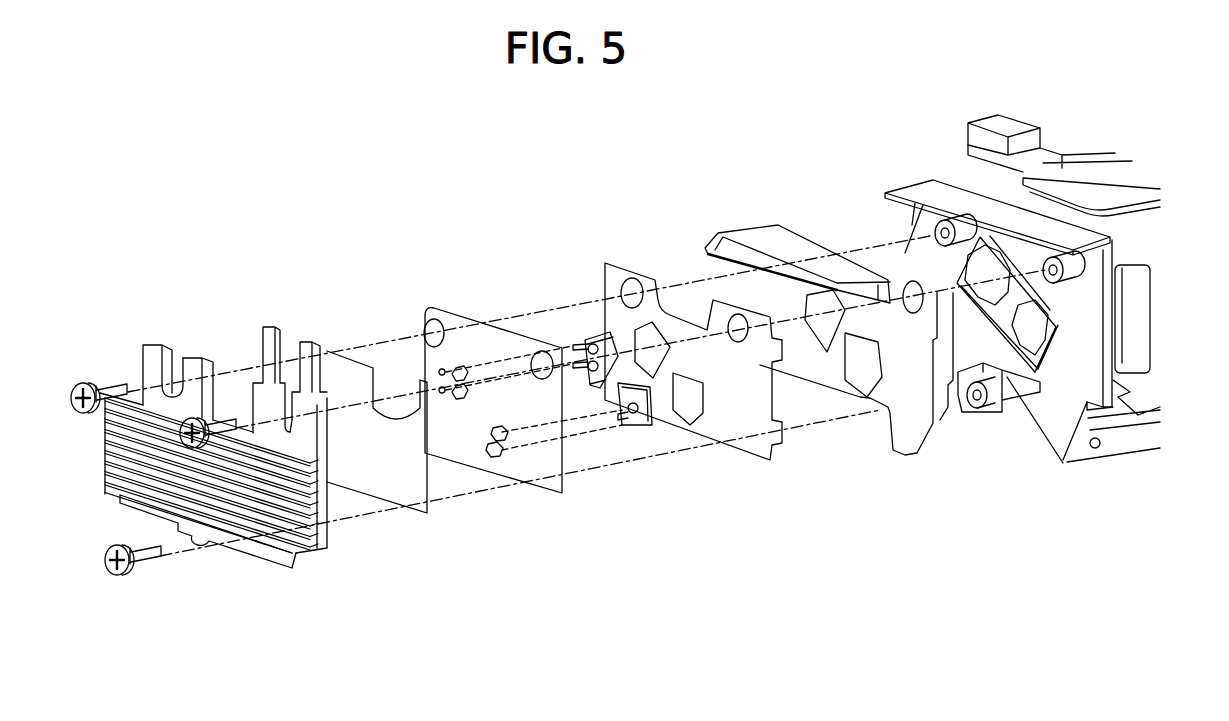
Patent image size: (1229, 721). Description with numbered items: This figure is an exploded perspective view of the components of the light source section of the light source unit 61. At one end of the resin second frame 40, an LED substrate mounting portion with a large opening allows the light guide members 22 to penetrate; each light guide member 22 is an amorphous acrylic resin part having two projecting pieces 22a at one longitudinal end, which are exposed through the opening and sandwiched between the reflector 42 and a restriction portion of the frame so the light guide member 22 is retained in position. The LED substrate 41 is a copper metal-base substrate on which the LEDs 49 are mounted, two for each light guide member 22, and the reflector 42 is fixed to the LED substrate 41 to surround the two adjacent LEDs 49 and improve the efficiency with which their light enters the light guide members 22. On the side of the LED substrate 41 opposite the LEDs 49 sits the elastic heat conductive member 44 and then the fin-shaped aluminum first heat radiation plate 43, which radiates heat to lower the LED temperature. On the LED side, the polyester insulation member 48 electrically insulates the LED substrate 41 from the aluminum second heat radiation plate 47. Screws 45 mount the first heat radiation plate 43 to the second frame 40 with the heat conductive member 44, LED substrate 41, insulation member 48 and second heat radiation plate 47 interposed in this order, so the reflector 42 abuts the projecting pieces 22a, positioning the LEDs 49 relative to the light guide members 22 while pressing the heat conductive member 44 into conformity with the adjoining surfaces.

The light guide member 22 is at (1002, 290).
The projecting piece 22a is at (1028, 312).
The second frame 40 is at (1050, 433).
The LED substrate 41 is at (545, 477).
The reflector 42 is at (626, 384).
The first heat radiation plate 43 is at (268, 553).
The heat conductive member 44 is at (392, 493).
The screw 45 is at (82, 382).
The second heat radiation plate 47 is at (768, 237).
The insulation member 48 is at (745, 432).
The LED 49 is at (512, 452).
The light source unit 61 is at (896, 172).